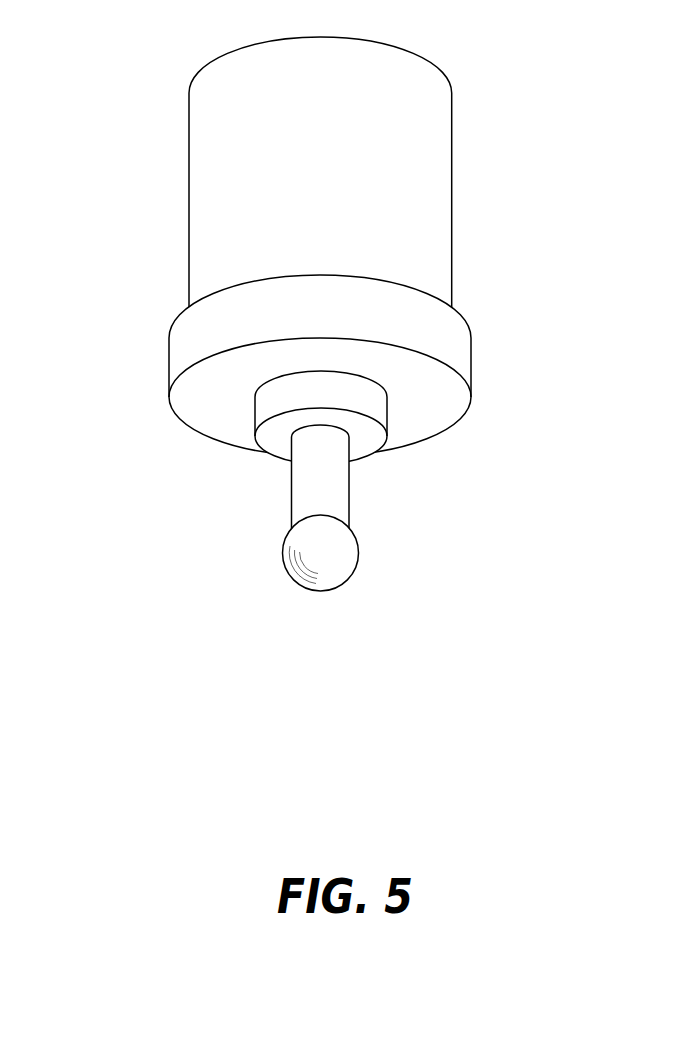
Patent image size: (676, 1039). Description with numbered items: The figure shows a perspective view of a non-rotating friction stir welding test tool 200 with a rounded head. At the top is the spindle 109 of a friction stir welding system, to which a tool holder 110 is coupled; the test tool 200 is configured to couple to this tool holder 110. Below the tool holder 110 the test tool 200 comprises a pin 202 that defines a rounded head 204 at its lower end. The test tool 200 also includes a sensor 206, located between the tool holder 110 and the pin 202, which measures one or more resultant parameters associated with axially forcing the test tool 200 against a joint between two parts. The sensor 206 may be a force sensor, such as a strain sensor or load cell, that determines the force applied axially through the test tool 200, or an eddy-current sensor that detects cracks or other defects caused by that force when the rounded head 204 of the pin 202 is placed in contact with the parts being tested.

The spindle 109 is at (188, 188).
The tool holder 110 is at (169, 358).
The non-rotating friction stir welding test tool 200 is at (298, 325).
The pin 202 is at (291, 492).
The rounded head 204 is at (283, 565).
The sensor 206 is at (278, 393).